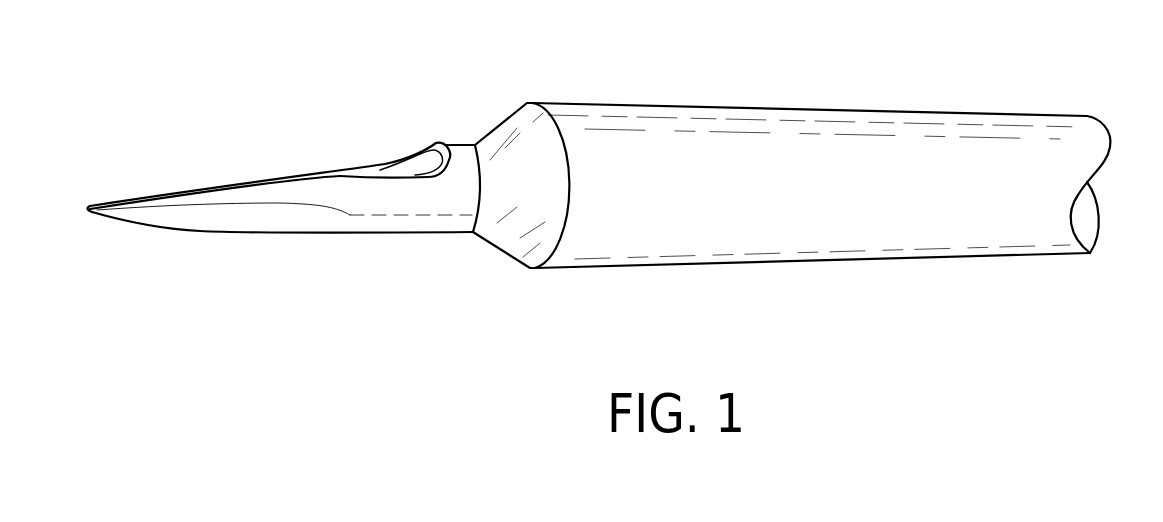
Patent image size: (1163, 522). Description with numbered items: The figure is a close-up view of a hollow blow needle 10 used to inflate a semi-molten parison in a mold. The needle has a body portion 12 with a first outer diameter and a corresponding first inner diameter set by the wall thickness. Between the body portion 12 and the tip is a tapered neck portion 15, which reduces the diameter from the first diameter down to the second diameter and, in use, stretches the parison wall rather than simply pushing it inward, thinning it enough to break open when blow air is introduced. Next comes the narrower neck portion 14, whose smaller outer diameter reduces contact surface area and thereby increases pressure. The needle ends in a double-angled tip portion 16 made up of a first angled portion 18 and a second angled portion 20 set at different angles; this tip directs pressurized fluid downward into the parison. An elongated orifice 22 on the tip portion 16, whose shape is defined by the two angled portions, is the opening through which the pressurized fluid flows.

The hollow blow needle 10 is at (933, 112).
The body portion 12 is at (810, 238).
The neck portion 14 is at (452, 223).
The tapered neck portion 15 is at (527, 142).
The tip portion 16 is at (273, 219).
The first angled portion 18 is at (243, 184).
The second angled portion 20 is at (152, 227).
The orifice 22 is at (427, 165).